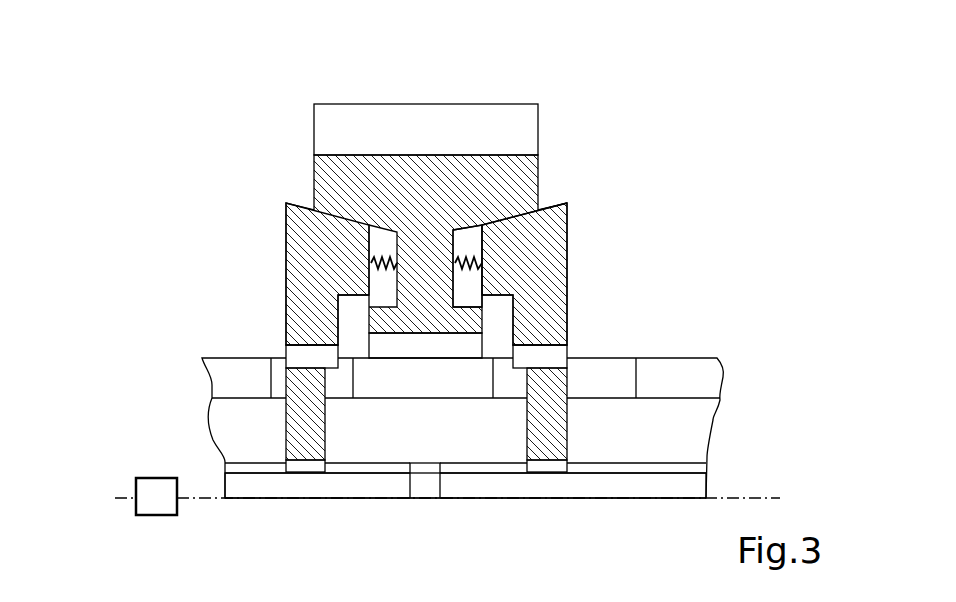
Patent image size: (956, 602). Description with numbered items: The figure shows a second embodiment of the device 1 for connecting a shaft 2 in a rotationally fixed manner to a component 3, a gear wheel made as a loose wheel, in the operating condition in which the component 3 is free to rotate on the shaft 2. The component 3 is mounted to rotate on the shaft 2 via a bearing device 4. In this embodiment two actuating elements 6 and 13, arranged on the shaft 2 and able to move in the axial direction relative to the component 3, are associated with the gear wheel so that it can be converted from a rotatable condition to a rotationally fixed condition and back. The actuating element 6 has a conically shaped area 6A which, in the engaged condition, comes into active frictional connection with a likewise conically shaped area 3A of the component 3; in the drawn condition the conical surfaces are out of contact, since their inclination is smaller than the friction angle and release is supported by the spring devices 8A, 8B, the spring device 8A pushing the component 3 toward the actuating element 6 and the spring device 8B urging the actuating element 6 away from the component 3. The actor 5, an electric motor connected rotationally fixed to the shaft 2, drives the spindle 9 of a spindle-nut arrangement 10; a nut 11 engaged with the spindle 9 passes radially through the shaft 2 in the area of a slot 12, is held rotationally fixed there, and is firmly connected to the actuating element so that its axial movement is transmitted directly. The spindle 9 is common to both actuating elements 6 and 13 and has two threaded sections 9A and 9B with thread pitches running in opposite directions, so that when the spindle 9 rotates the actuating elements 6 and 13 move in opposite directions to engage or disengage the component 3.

The device 1 is at (266, 99).
The shaft 2 is at (235, 367).
The component 3 is at (333, 128).
The conically shaped area 3A is at (462, 230).
The bearing device 4 is at (402, 348).
The actor 5 is at (153, 487).
The actuating element 6 is at (483, 263).
The conical area of actuating element 6A is at (548, 207).
The spring device 8A is at (397, 265).
The spring device 8B is at (552, 230).
The spindle 9 is at (237, 499).
The threaded section 9A is at (280, 485).
The threaded section 9B is at (495, 487).
The spindle-nut arrangement 10 is at (550, 487).
The nut 11 is at (548, 395).
The slot 12 is at (597, 377).
The actuating element 13 is at (302, 230).